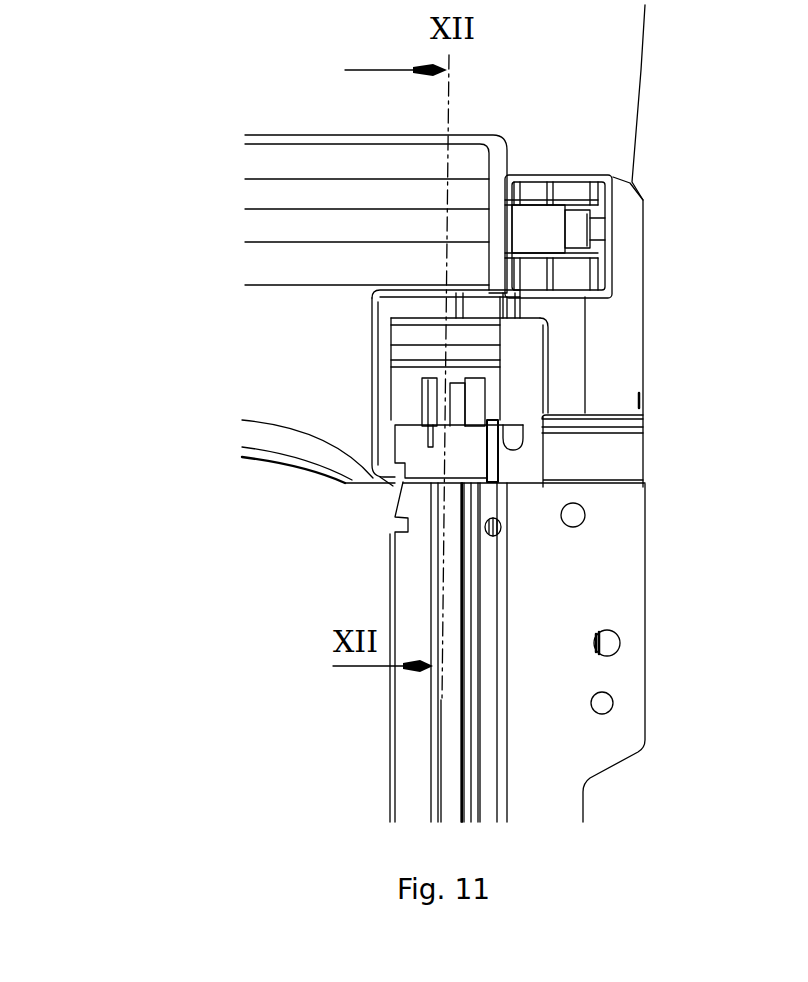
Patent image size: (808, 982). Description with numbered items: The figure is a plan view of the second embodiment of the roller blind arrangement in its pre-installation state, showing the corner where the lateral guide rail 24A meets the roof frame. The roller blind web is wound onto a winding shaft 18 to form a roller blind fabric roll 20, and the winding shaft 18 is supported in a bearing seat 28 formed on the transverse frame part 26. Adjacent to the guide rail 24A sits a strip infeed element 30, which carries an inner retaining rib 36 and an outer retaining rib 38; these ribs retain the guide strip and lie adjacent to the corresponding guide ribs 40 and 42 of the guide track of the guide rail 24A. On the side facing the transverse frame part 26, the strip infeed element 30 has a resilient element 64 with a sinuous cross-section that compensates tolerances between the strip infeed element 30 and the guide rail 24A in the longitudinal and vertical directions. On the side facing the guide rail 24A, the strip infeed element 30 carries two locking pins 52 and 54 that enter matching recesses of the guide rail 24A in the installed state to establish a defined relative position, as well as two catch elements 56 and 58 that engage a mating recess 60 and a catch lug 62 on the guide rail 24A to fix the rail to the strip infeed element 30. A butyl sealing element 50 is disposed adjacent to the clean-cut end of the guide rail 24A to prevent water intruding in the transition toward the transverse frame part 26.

The winding shaft 18 is at (525, 222).
The roller blind fabric roll 20 is at (290, 163).
The guide rail 24A is at (620, 580).
The transverse frame part 26 is at (630, 277).
The bearing seat 28 is at (612, 218).
The strip infeed element 30 is at (425, 410).
The inner retaining rib 36 is at (437, 387).
The outer retaining rib 38 is at (468, 402).
The guide rib 40 is at (437, 755).
The guide rib 42 is at (465, 738).
The sealing element 50 is at (642, 412).
The pin 52 is at (640, 434).
The pin 54 is at (433, 444).
The catch element 56 is at (345, 483).
The catch element 58 is at (487, 482).
The mating catch element 60 is at (408, 527).
The mating catch element 62 is at (501, 527).
The resilient element 64 is at (485, 343).